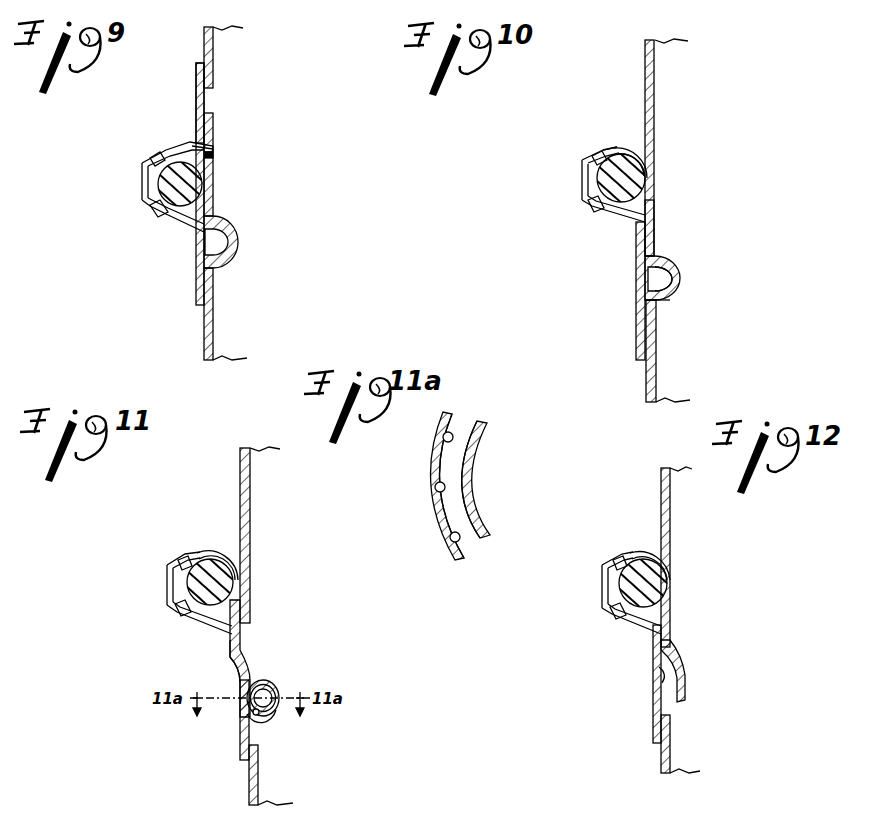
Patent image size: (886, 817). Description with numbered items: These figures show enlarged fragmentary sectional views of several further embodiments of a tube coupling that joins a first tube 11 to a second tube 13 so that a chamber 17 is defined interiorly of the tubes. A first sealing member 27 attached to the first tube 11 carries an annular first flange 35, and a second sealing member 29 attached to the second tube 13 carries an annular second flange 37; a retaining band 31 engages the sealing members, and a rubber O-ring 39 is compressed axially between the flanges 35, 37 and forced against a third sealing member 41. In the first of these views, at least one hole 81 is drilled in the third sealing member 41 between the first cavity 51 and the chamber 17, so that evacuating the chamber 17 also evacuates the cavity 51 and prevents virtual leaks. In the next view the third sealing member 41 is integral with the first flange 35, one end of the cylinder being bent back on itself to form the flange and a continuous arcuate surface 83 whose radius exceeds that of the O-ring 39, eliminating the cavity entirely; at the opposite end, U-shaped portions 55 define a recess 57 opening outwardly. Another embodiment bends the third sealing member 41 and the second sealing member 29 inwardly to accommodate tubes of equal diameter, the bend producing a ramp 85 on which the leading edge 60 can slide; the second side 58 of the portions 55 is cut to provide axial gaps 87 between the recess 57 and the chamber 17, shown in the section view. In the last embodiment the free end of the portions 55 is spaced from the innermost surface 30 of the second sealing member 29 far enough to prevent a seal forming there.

In FIG. 9, the first tube 11 is at (213, 58).
In FIG. 10, the first tube 11 is at (655, 85).
In FIG. 11, the first tube 11 is at (250, 480).
In FIG. 12, the first tube 11 is at (670, 500).
In FIG. 9, the second tube 13 is at (208, 322).
In FIG. 10, the second tube 13 is at (653, 384).
In FIG. 11, the second tube 13 is at (254, 787).
In FIG. 12, the second tube 13 is at (668, 755).
In FIG. 9, the chamber 17 is at (257, 87).
In FIG. 10, the chamber 17 is at (707, 102).
In FIG. 11, the chamber 17 is at (289, 502).
In FIG. 12, the chamber 17 is at (720, 519).
In FIG. 9, the first sealing member 27 is at (196, 115).
In FIG. 9, the second sealing member 29 is at (200, 273).
In FIG. 10, the second sealing member 29 is at (642, 268).
In FIG. 11, the second sealing member 29 is at (242, 732).
In FIG. 11A, the second sealing member 29 is at (447, 437).
In FIG. 12, the second sealing member 29 is at (657, 705).
In FIG. 12, the innermost surface 30 is at (656, 668).
In FIG. 9, the retaining band 31 is at (142, 183).
In FIG. 10, the retaining band 31 is at (582, 172).
In FIG. 11, the retaining band 31 is at (167, 590).
In FIG. 12, the retaining band 31 is at (602, 592).
In FIG. 10, the first flange 35 is at (614, 150).
In FIG. 11, the first flange 35 is at (210, 555).
In FIG. 12, the first flange 35 is at (640, 555).
In FIG. 11, the second flange 37 is at (188, 622).
In FIG. 9, the O-ring 39 is at (148, 207).
In FIG. 10, the O-ring 39 is at (612, 183).
In FIG. 11, the O-ring 39 is at (226, 586).
In FIG. 12, the O-ring 39 is at (655, 580).
In FIG. 9, the third sealing member 41 is at (213, 200).
In FIG. 10, the third sealing member 41 is at (655, 214).
In FIG. 11, the third sealing member 41 is at (245, 632).
In FIG. 9, the first cavity 51 is at (210, 148).
In FIG. 10, the portions 55 is at (676, 266).
In FIG. 11, the portions 55 is at (279, 698).
In FIG. 11A, the portions 55 is at (482, 500).
In FIG. 12, the portions 55 is at (685, 694).
In FIG. 10, the recess 57 is at (665, 282).
In FIG. 10, the second side 58 is at (655, 300).
In FIG. 11, the second side 58 is at (265, 716).
In FIG. 11, the leading edge 60 is at (263, 690).
In FIG. 11A, the leading edge 60 is at (453, 470).
In FIG. 9, the hole 81 is at (213, 156).
In FIG. 10, the arcuate surface 83 is at (634, 152).
In FIG. 11, the ramp 85 is at (228, 664).
In FIG. 11, the gaps 87 is at (257, 718).
In FIG. 11A, the gaps 87 is at (454, 538).